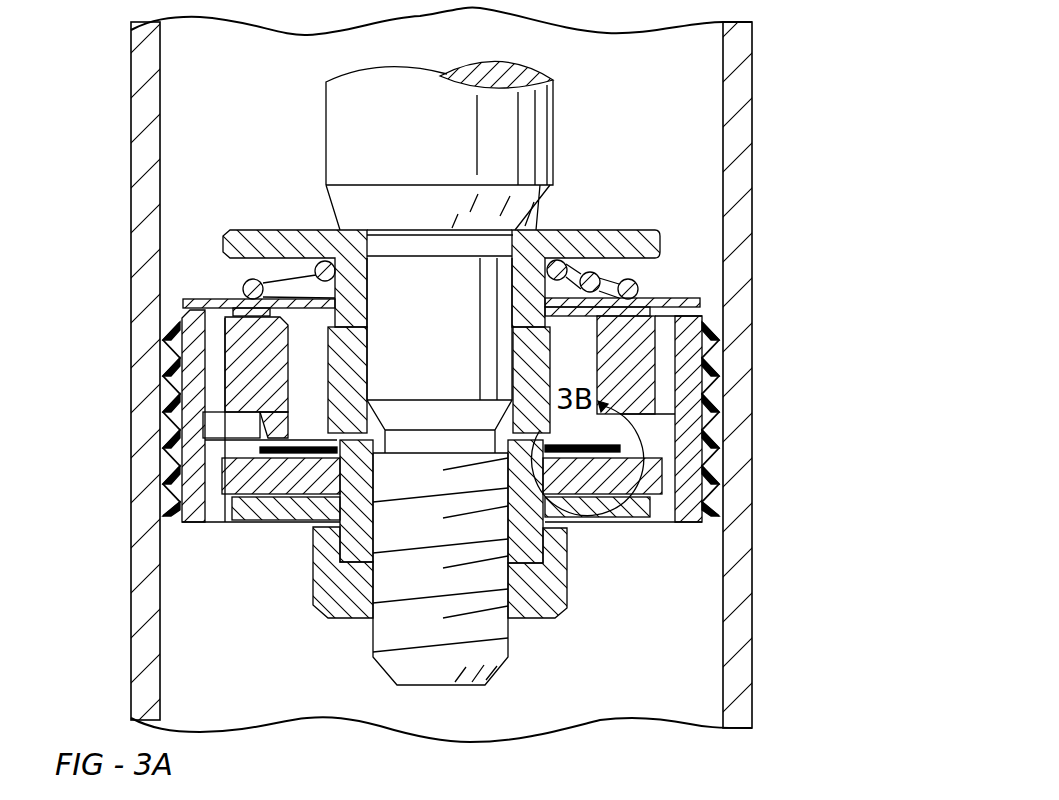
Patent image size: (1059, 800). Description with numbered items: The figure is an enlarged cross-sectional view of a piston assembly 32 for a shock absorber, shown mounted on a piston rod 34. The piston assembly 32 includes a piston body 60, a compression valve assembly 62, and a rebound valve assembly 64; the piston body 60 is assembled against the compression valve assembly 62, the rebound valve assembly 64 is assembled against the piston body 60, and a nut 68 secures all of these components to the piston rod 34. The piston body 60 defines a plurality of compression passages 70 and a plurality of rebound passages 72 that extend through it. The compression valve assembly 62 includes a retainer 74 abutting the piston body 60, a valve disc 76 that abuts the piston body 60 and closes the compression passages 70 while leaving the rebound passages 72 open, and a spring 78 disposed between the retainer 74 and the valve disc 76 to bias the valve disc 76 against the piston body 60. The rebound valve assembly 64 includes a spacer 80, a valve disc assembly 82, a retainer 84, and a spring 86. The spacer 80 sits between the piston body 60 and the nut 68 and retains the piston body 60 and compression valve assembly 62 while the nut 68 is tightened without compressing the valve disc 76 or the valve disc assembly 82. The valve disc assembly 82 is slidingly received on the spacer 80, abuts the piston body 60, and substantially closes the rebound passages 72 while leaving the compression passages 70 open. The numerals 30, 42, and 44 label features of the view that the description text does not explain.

The structure / panel wall 30 is at (735, 96).
The piston assembly 32 is at (278, 624).
The piston rod 34 is at (427, 146).
The upper cavity / first side 42 is at (676, 90).
The lower cavity 44 is at (656, 607).
The piston body 60 is at (702, 361).
The compression valve assembly 62 is at (690, 240).
The rebound valve assembly 64 is at (282, 533).
The nut 68 is at (550, 620).
The compression passages 70 is at (667, 342).
The rebound passages 72 is at (308, 362).
The retainer 74 is at (558, 242).
The valve disc 76 is at (704, 307).
The spring 78 is at (642, 289).
The spacer 80 is at (545, 481).
The valve disc assembly 82 is at (330, 447).
The retainer 84 is at (248, 502).
The spring 86 is at (262, 456).